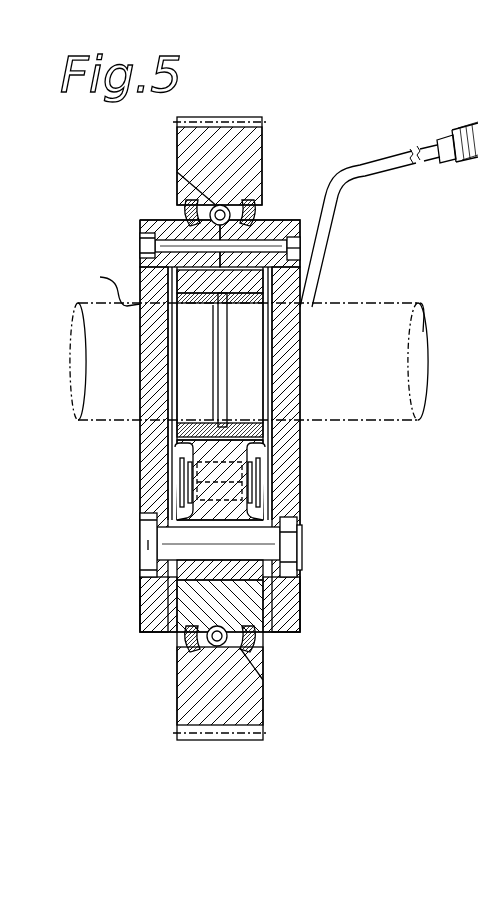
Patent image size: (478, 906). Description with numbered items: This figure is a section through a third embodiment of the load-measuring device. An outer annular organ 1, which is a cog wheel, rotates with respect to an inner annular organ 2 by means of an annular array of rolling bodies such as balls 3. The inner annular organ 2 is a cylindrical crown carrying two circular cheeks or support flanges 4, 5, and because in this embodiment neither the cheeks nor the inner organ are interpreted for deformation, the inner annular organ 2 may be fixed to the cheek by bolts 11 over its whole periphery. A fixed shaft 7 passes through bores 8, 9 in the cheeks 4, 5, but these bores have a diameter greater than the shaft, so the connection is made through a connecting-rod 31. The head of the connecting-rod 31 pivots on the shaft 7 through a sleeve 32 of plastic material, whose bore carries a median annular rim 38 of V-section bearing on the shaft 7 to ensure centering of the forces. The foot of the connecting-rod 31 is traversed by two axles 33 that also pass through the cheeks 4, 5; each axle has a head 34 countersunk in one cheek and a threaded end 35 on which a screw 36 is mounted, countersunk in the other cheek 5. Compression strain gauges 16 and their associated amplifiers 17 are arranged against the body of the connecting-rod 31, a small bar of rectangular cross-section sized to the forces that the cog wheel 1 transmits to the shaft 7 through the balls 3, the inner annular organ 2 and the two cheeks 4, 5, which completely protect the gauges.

The outer annular organ 1 is at (192, 158).
The inner annular organ 2 is at (197, 602).
The balls 3 is at (215, 210).
The cheek 4 is at (156, 594).
The cheek 5 is at (289, 612).
The fixed shaft 7 is at (394, 303).
The bore 8 is at (118, 292).
The bore 9 is at (313, 303).
The bolts 11 is at (254, 246).
The compression strain gauges 16 is at (188, 487).
The amplifiers 17 is at (183, 460).
The connecting-rod 31 is at (265, 506).
The sleeve 32 is at (195, 427).
The axles 33 is at (180, 543).
The head 34 is at (146, 536).
The threaded end 35 is at (298, 547).
The screw 36 is at (301, 567).
The median annular rim 38 is at (213, 340).